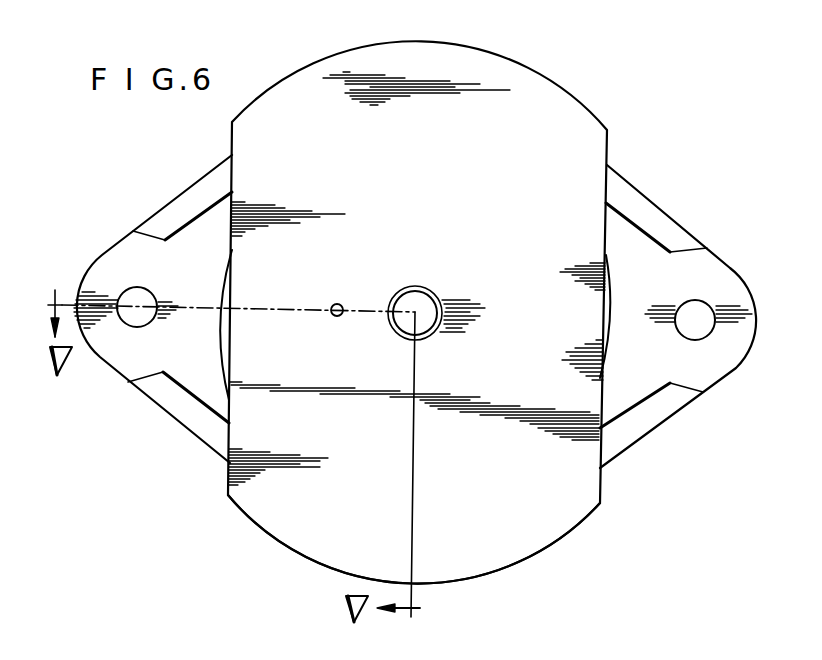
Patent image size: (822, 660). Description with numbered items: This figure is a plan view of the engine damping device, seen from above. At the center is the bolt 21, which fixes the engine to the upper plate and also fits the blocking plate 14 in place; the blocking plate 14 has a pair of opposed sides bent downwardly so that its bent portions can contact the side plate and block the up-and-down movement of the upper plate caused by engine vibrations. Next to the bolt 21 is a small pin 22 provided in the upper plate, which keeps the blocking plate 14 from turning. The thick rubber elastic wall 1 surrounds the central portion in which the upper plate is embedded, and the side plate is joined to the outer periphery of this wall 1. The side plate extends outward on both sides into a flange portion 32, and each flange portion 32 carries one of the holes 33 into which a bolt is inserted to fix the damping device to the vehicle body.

The rubber elastic wall 1 is at (610, 308).
The blocking plate 14 is at (523, 553).
The bolt 21 is at (433, 320).
The pin 22 is at (340, 318).
The flange portion 32 is at (195, 380).
The holes 33 is at (142, 320).